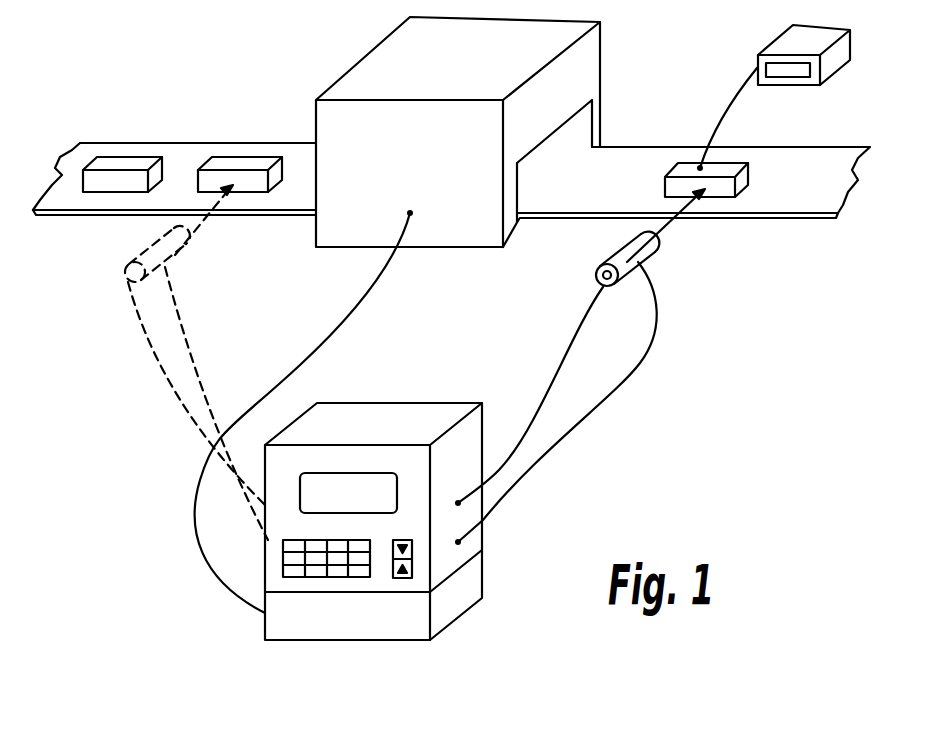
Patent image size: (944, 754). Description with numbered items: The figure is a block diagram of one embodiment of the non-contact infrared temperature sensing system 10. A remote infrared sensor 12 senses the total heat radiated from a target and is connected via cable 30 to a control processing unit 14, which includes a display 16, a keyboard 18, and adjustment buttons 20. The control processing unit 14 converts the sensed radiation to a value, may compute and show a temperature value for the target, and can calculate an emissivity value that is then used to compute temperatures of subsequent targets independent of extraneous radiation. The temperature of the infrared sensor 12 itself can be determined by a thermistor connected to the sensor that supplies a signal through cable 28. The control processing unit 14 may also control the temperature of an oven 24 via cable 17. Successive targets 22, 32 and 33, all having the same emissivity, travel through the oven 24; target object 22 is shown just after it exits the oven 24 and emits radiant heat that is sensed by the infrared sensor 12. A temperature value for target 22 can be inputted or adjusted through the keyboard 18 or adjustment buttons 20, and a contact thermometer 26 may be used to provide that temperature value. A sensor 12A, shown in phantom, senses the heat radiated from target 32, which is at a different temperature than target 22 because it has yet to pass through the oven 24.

The non-contact infrared temperature sensing system 10 is at (808, 474).
The remote infrared sensor 12 is at (604, 259).
The sensor shown in phantom 12A is at (190, 251).
The control processing unit 14 is at (411, 552).
The display 16 is at (355, 490).
The cable 17 is at (345, 318).
The keyboard 18 is at (337, 578).
The adjustment buttons 20 is at (403, 578).
The target object 22 is at (750, 175).
The oven 24 is at (467, 70).
The contact thermometer 26 is at (770, 45).
The cable 28 is at (613, 393).
The cable 30 is at (553, 383).
The target 32 is at (236, 163).
The target 33 is at (128, 163).